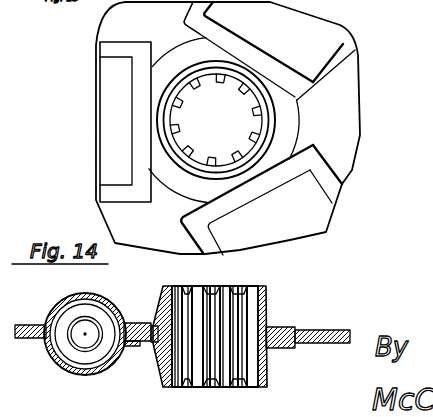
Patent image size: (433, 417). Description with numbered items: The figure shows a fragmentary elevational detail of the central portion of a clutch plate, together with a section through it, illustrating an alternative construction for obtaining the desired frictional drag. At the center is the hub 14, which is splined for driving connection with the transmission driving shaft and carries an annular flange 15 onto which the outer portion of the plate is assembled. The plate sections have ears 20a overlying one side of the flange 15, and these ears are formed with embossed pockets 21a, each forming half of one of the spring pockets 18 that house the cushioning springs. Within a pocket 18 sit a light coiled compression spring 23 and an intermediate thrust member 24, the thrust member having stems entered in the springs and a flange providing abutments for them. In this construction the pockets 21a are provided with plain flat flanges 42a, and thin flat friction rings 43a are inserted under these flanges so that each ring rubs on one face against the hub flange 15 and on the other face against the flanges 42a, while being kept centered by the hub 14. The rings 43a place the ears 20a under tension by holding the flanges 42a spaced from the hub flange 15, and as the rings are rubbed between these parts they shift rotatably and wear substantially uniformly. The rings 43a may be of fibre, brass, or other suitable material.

In FIG. 13, the center hub 14 is at (190, 155).
In FIG. 14, the center hub 14 is at (262, 287).
In FIG. 13, the annular flange 15 is at (338, 153).
In FIG. 14, the annular flange 15 is at (338, 332).
In FIG. 13, the spring pockets 18 is at (261, 128).
In FIG. 14, the spring pockets 18 is at (72, 298).
In FIG. 13, the ears 20a is at (193, 9).
In FIG. 14, the ears 20a is at (28, 323).
In FIG. 13, the pockets 21a is at (237, 30).
In FIG. 14, the pockets 21a is at (48, 353).
In FIG. 14, the light coiled compression springs 23 is at (108, 370).
In FIG. 14, the thrust members 24 is at (83, 340).
In FIG. 13, the flat flanges 42a is at (323, 82).
In FIG. 14, the flat flanges 42a is at (135, 322).
In FIG. 13, the friction rings 43a is at (287, 125).
In FIG. 14, the friction rings 43a is at (309, 330).